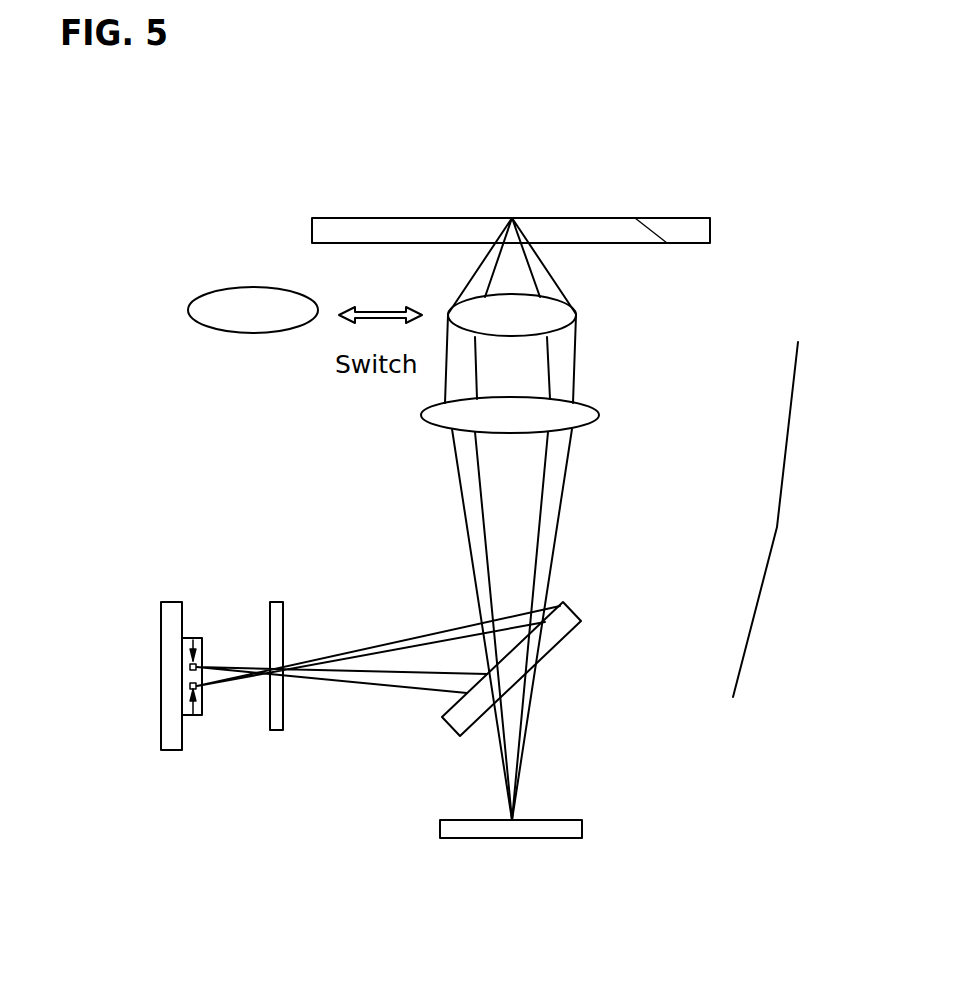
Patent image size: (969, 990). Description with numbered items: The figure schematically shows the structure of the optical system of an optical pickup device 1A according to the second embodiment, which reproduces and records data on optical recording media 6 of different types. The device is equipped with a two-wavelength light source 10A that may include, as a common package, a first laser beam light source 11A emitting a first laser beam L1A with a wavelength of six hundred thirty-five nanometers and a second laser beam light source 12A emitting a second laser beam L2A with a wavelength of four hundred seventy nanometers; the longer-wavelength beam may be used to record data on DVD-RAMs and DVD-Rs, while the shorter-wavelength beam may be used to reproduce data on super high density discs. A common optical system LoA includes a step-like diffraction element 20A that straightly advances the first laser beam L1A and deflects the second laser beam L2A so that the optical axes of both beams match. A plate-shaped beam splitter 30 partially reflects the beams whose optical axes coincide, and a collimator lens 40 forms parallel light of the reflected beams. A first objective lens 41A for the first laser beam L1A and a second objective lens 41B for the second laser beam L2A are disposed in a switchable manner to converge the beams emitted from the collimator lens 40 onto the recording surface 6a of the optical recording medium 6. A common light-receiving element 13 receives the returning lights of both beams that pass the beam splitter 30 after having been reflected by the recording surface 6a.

The optical pickup device 1A is at (125, 255).
The optical recording medium 6 is at (727, 227).
The recording surface 6a is at (667, 243).
The second objective lens 41B is at (245, 283).
The first objective lens 41A is at (588, 308).
The collimator lens 40 is at (605, 415).
The second laser beam L2A is at (566, 490).
The first laser beam L1A is at (538, 547).
The beam splitter 30 is at (560, 646).
The light-receiving element 13 is at (588, 829).
The common optical system LoA is at (792, 519).
The first laser beam light source 11A is at (192, 638).
The second laser beam light source 12A is at (191, 716).
The two-wavelength light source 10A is at (200, 692).
The step-like diffraction element 20A is at (276, 600).